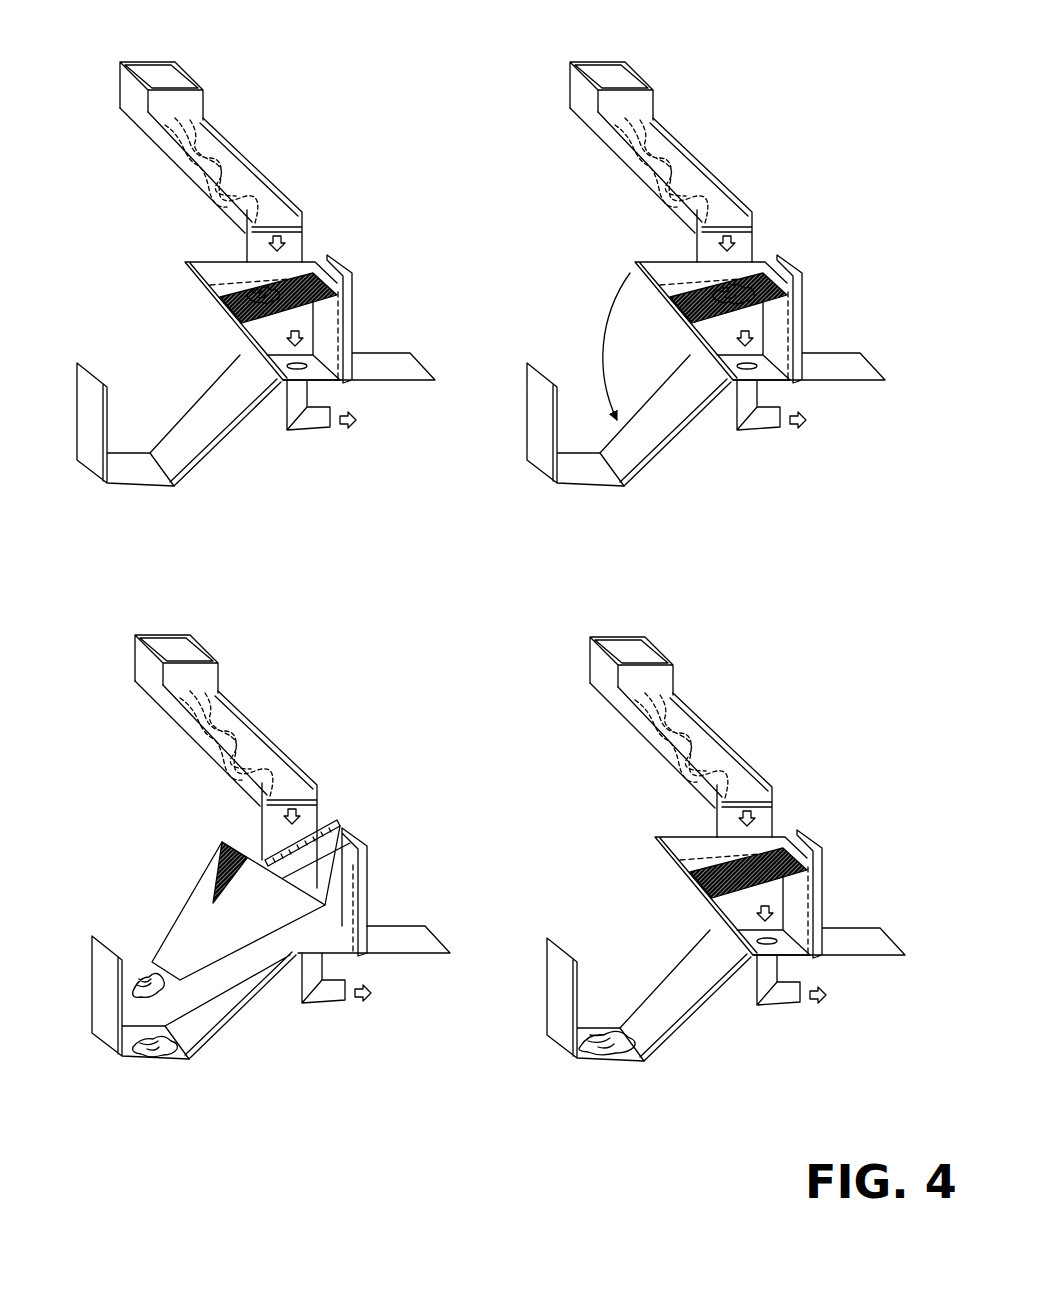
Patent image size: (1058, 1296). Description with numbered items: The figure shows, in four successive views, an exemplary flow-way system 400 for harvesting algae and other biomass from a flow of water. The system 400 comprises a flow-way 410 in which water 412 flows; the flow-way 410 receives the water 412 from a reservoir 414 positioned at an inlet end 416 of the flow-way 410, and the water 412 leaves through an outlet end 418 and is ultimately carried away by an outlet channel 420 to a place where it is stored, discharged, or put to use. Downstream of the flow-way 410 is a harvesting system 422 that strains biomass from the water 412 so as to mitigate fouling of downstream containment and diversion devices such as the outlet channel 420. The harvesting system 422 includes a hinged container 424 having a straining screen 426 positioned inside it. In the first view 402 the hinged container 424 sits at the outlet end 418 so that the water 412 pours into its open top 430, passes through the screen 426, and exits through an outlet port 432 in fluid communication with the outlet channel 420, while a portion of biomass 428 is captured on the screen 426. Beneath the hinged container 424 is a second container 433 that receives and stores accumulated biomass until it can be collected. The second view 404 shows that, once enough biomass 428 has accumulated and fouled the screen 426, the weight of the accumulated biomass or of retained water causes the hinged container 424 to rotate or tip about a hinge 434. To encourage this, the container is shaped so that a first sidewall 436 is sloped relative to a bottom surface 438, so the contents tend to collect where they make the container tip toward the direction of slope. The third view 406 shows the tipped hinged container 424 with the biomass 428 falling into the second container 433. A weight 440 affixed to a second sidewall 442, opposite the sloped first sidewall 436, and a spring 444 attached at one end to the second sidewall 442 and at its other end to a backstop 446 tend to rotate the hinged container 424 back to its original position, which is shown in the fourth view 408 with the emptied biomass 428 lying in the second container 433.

The flow-way system 400 is at (318, 166).
The first view 402 is at (378, 50).
The second view 404 is at (747, 278).
The third view 406 is at (306, 827).
The fourth view 408 is at (779, 800).
The flow-way 410 is at (197, 177).
The water 412 is at (210, 150).
The reservoir 414 is at (190, 76).
The inlet end 416 is at (655, 94).
The outlet end 418 is at (705, 185).
The outlet channel 420 is at (799, 421).
The harvesting system 422 is at (135, 277).
The hinged container 424 is at (222, 262).
The straining screen 426 is at (308, 262).
The biomass 428 is at (245, 330).
The open top 430 is at (710, 871).
The outlet port 432 is at (300, 368).
The second container 433 is at (421, 1012).
The hinge 434 is at (696, 397).
The first sidewall 436 is at (245, 1005).
The bottom surface 438 is at (374, 964).
The weight 440 is at (362, 854).
The second sidewall 442 is at (238, 887).
The spring 444 is at (343, 821).
The backstop 446 is at (401, 890).